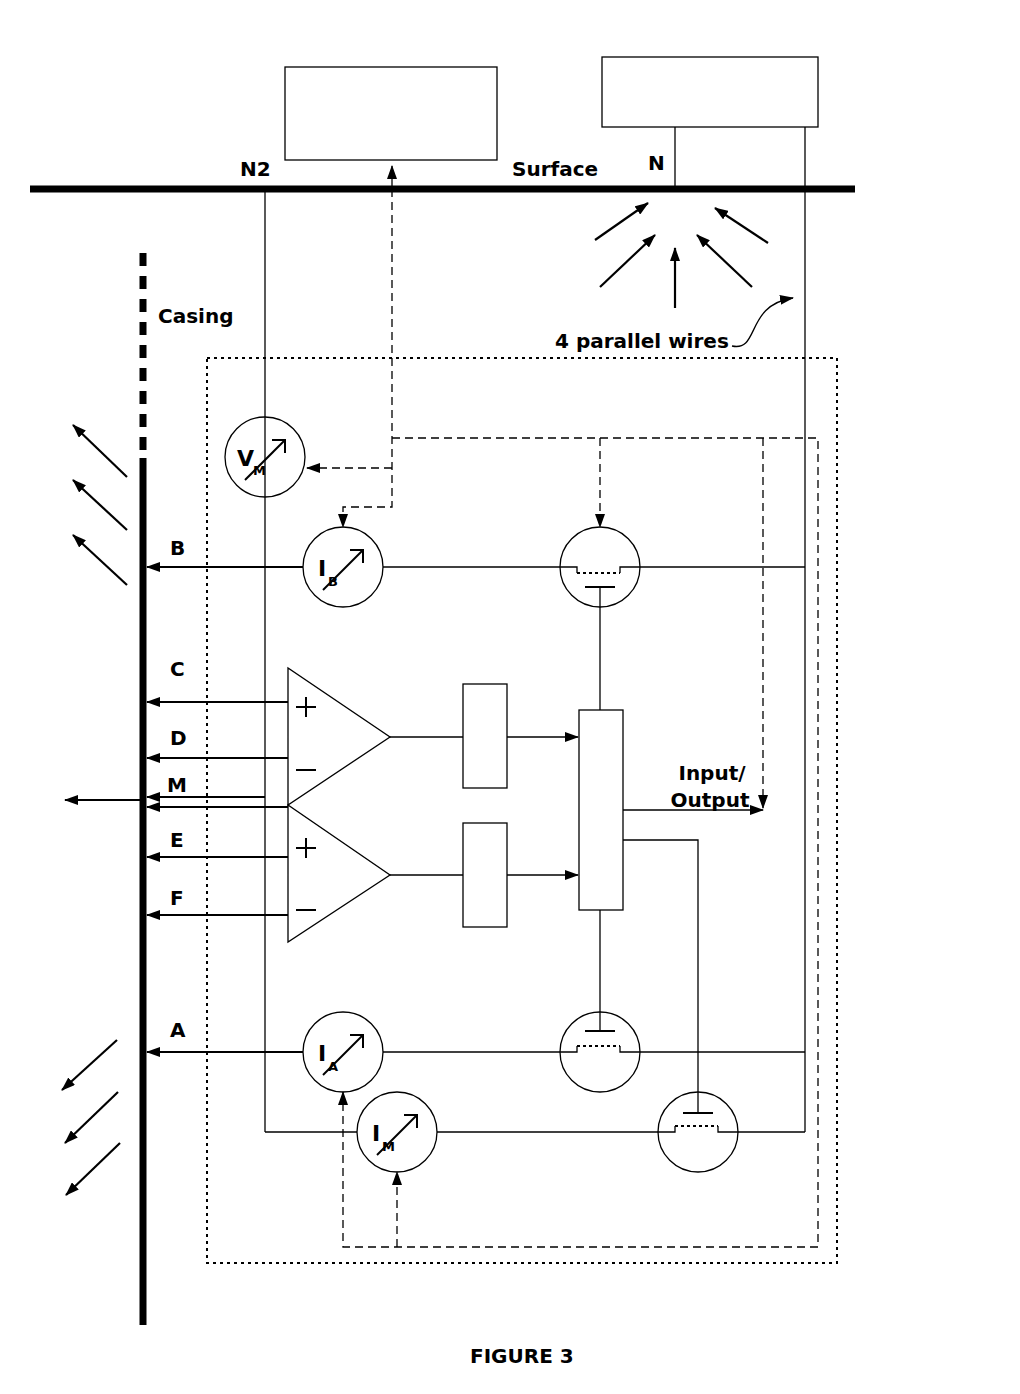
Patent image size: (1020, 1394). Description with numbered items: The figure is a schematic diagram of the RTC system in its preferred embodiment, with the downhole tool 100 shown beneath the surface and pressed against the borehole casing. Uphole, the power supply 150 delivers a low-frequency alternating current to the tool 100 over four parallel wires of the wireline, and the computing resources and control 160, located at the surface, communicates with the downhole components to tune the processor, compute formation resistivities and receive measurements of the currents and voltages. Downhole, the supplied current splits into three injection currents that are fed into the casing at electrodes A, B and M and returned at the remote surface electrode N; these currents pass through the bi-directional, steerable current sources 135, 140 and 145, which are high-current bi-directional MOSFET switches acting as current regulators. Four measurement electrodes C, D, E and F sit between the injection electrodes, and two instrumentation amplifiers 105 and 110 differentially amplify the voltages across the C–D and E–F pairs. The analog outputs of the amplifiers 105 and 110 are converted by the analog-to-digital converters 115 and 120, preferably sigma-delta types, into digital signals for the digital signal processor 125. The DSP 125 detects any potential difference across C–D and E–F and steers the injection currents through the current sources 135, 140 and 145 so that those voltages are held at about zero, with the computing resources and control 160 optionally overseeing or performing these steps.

The downhole tool 100 is at (838, 412).
The amplifier 105 is at (352, 708).
The amplifier 110 is at (312, 928).
The analog-to-digital converter 115 is at (478, 684).
The analog-to-digital converter 120 is at (487, 927).
The digital signal processor 125 is at (624, 716).
The bi-directional steerable current source 135 is at (590, 528).
The bi-directional steerable current source 140 is at (572, 1022).
The bi-directional steerable current source 145 is at (675, 1170).
The power supply 150 is at (602, 90).
The computing resources and control 160 is at (430, 67).